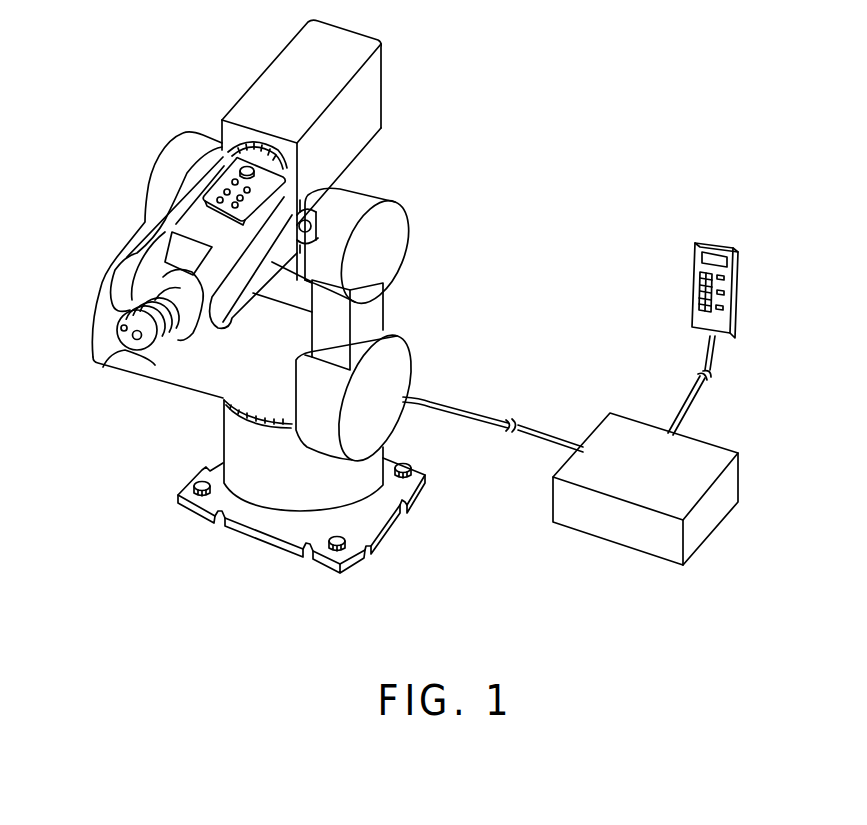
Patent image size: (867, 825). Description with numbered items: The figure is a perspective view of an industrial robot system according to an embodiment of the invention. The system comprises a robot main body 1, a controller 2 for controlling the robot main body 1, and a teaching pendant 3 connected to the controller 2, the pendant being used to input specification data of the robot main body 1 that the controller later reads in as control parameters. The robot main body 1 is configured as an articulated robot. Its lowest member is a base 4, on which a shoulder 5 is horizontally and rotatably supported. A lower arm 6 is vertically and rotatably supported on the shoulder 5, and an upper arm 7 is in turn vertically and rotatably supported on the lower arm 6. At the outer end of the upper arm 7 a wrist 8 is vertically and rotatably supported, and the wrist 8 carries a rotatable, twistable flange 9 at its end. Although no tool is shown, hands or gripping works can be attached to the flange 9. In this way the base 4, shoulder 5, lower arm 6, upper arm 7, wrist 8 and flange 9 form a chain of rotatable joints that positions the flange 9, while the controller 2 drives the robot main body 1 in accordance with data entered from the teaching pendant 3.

The robot main body 1 is at (432, 163).
The controller 2 is at (612, 538).
The teaching pendant 3 is at (693, 273).
The base 4 is at (223, 443).
The shoulder 5 is at (197, 373).
The lower arm 6 is at (387, 310).
The upper arm 7 is at (222, 307).
The wrist 8 is at (190, 333).
The flange 9 is at (120, 347).